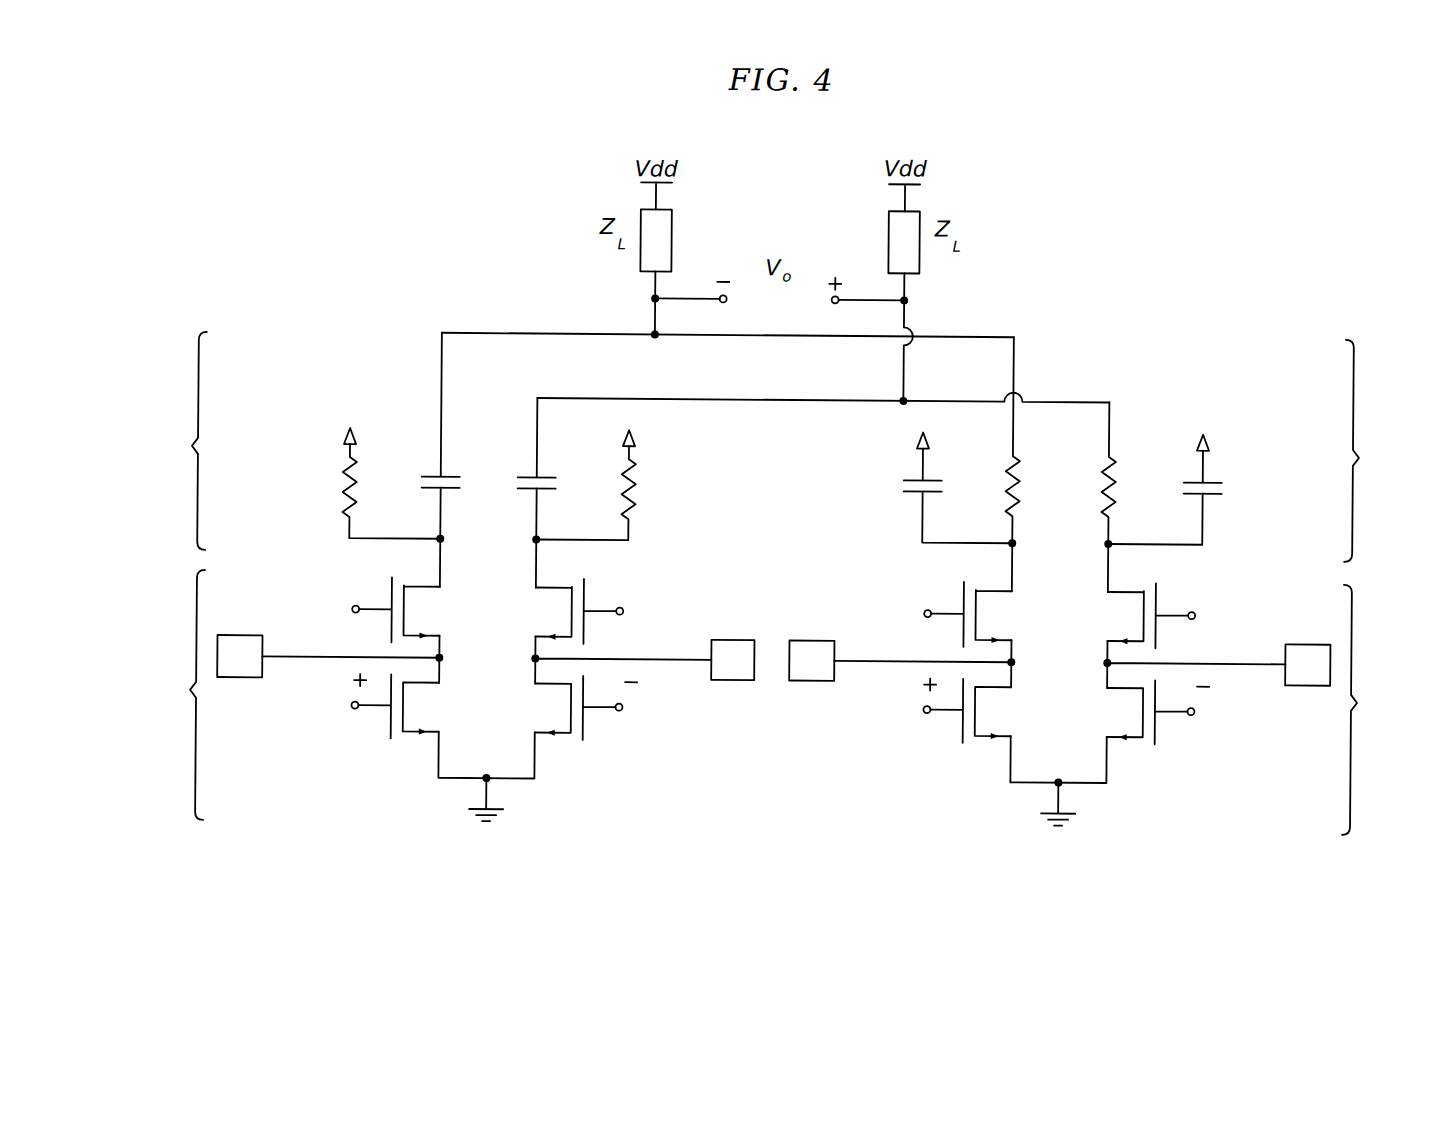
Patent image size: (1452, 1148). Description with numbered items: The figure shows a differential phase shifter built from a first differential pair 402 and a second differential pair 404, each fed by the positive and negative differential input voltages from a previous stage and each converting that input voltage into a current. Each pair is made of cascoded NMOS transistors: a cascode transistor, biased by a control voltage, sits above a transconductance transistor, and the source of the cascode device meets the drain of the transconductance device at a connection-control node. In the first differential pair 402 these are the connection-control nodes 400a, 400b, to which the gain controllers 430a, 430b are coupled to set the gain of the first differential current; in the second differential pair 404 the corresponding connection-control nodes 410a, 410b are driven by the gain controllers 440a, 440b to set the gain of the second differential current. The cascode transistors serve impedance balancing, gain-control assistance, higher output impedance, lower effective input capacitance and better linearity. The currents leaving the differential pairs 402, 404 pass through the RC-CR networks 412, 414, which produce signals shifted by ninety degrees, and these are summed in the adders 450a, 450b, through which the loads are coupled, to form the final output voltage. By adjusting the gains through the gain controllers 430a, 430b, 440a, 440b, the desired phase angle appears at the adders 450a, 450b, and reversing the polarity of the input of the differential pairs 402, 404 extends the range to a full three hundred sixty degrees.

The adder 450a is at (651, 333).
The adder 450b is at (904, 398).
The RC-CR network 414 is at (407, 441).
The first frequency-shaping load network (R1, C1) 412 is at (1141, 449).
The second differential pair 404 is at (447, 680).
The first differential pair 402 is at (1101, 688).
The gain controller 440a is at (238, 639).
The gain controller 440b is at (731, 640).
The gain controller 430a is at (816, 640).
The gain controller 430b is at (1302, 640).
The connection-control node 410a is at (442, 659).
The connection-control node 410b is at (534, 662).
The connection-control node 400a is at (1014, 659).
The connection-control node 400b is at (1106, 662).